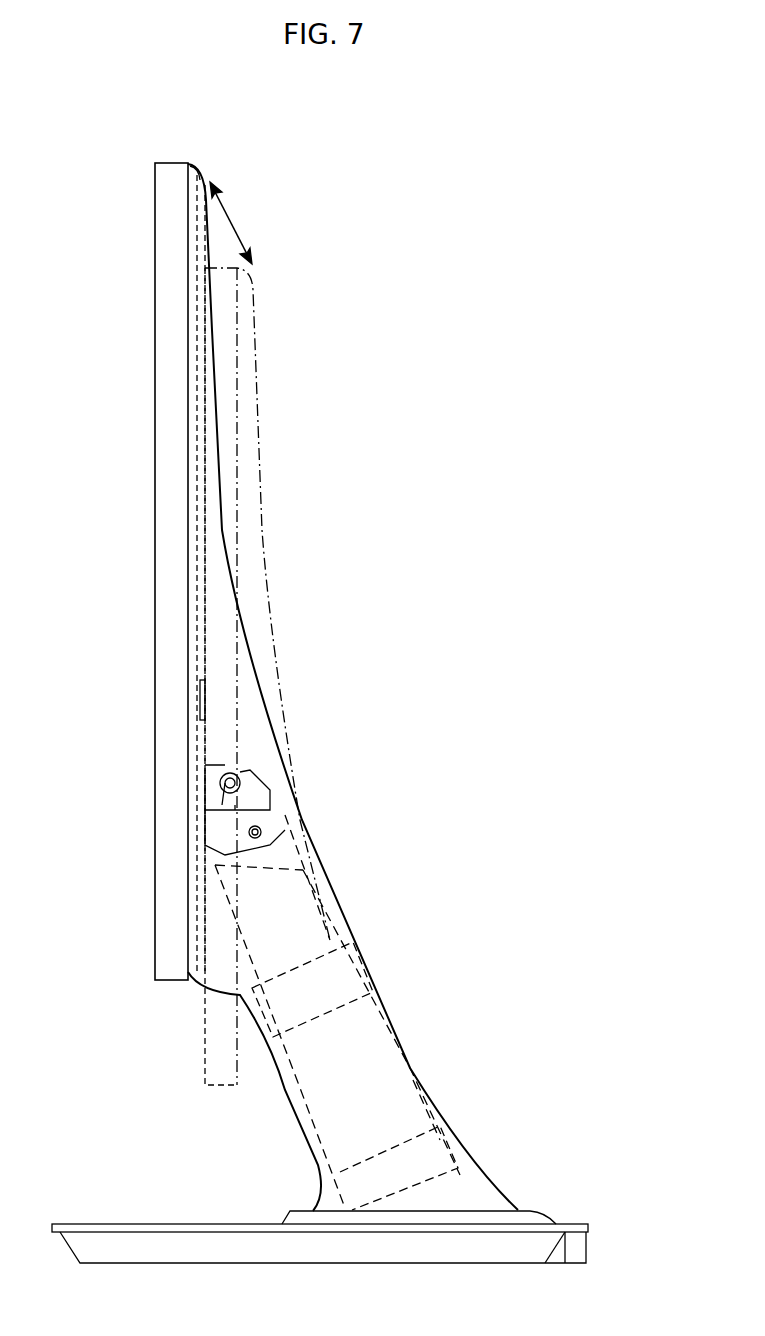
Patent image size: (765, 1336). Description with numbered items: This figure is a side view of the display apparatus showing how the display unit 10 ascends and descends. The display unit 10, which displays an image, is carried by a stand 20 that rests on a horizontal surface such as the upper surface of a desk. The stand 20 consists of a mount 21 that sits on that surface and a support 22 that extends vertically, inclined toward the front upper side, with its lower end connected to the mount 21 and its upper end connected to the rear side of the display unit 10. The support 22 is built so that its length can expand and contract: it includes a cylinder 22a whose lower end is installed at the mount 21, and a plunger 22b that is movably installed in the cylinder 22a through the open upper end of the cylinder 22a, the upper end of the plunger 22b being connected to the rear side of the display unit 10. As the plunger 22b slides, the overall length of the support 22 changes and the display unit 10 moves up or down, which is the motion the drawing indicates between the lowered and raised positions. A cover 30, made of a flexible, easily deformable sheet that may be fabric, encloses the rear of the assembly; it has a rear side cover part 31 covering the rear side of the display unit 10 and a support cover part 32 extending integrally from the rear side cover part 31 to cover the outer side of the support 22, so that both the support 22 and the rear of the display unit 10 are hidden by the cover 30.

The display unit 10 is at (140, 332).
The stand 20 is at (523, 1148).
The mount 21 is at (580, 1245).
The support 22 is at (404, 1068).
The cylinder 22a is at (425, 1097).
The plunger 22b is at (322, 881).
The cover 30 is at (256, 690).
The rear side cover part 31 is at (226, 561).
The support cover part 32 is at (378, 992).